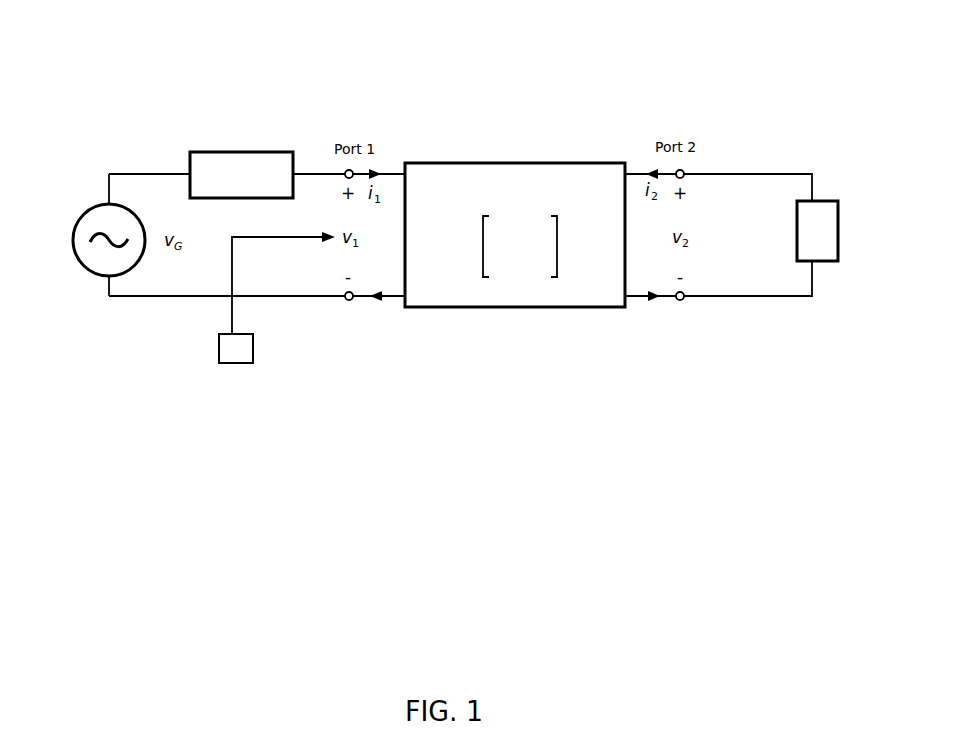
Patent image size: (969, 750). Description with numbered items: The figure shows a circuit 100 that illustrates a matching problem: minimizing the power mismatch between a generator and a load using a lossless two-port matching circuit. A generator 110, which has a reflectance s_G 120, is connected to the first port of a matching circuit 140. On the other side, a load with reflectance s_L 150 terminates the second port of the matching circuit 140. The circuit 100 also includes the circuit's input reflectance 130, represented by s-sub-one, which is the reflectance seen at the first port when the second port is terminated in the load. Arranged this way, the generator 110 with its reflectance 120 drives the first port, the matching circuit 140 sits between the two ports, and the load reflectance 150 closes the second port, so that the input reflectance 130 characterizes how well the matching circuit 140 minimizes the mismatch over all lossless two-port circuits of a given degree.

The circuit 100 is at (594, 55).
The generator 110 is at (90, 222).
The generator reflectance s_G 120 is at (265, 163).
The input reflectance s_1 130 is at (253, 345).
The matching circuit 140 is at (520, 178).
The load reflectance s_L 150 is at (833, 244).